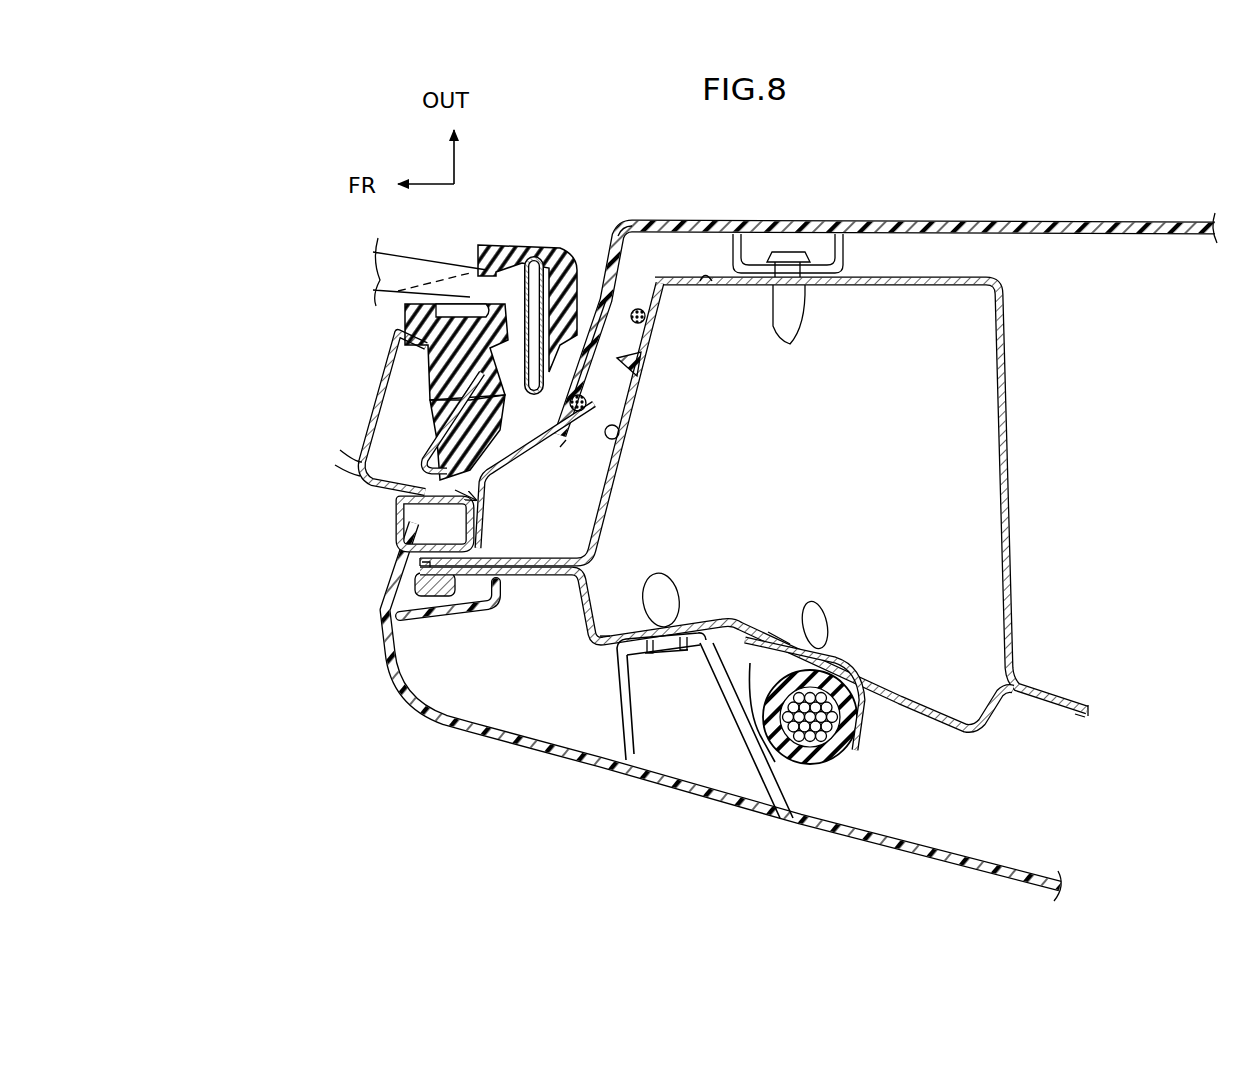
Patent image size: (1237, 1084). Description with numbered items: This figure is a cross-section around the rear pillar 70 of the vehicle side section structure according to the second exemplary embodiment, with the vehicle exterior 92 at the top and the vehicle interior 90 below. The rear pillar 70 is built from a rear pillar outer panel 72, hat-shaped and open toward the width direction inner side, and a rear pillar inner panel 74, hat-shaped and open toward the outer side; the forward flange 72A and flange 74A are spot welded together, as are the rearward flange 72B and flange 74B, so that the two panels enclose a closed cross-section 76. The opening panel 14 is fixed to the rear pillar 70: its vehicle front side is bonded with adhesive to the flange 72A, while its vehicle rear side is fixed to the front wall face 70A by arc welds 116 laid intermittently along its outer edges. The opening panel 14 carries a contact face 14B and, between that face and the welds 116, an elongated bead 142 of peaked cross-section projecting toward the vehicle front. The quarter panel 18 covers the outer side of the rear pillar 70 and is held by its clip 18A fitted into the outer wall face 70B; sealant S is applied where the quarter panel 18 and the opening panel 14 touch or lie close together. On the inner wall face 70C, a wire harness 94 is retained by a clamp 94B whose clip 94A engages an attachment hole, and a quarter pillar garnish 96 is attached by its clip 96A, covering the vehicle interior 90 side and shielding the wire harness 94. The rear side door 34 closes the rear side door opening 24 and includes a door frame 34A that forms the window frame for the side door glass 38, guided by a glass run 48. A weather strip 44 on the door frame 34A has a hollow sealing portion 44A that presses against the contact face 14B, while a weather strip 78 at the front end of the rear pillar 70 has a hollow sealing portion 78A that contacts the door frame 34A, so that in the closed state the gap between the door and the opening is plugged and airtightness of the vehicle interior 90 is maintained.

The quarter panel 18 is at (700, 220).
The weld 116 is at (632, 233).
The opening panel 14 is at (598, 232).
The contact face 14B is at (560, 447).
The bead 142 is at (600, 386).
The clip 18A is at (790, 310).
The rear pillar 70 is at (772, 496).
The front wall face 70A is at (618, 432).
The outer wall face 70B is at (707, 283).
The inner wall face 70C is at (780, 624).
The rear pillar outer panel 72 is at (905, 283).
The flange 72A is at (523, 560).
The flange 72B is at (1080, 702).
The rear pillar inner panel 74 is at (940, 712).
The flange 74A is at (524, 574).
The flange 74B is at (1073, 714).
The closed cross-section 76 is at (824, 485).
The vehicle interior 90 is at (906, 928).
The vehicle exterior 92 is at (995, 184).
The wire harness 94 is at (841, 742).
The clip 94A is at (824, 606).
The clamp 94B is at (787, 804).
The quarter pillar garnish 96 is at (705, 692).
The clip 96A is at (660, 576).
The rear side door 34 is at (379, 329).
The door frame 34A is at (368, 442).
The rear side door opening 24 is at (372, 483).
The side door glass 38 is at (441, 262).
The weather strip 44 is at (410, 392).
The hollow sealing portion 44A is at (432, 400).
The glass run 48 is at (522, 250).
The weather strip 78 is at (390, 590).
The hollow sealing portion 78A is at (398, 511).
The sealant S is at (630, 322).